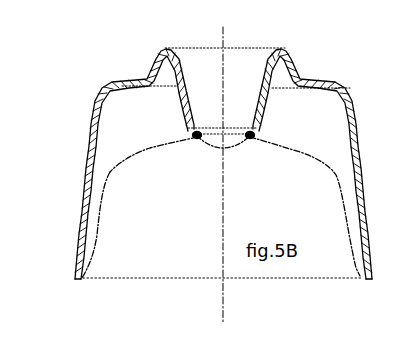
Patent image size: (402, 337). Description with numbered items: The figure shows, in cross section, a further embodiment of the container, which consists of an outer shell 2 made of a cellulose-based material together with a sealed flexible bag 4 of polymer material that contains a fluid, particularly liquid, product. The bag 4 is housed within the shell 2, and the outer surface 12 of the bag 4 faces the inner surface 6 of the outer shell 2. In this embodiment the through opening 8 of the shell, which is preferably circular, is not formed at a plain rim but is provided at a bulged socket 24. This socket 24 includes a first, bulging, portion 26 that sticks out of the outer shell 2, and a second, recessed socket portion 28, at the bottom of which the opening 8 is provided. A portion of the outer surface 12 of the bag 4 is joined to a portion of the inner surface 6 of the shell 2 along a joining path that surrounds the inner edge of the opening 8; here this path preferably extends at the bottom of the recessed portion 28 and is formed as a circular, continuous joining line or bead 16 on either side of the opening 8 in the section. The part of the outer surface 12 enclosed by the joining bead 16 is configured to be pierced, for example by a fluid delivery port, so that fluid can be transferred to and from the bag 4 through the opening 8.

The outer shell 2 is at (96, 92).
The sealed flexible bag 4 is at (104, 189).
The inner surface 6 is at (95, 160).
The through opening 8 is at (231, 128).
The outer surface 12 is at (127, 154).
The joining line or bead 16 is at (195, 140).
The bulged socket 24 is at (201, 85).
The bulging portion 26 is at (158, 72).
The recessed portion 28 is at (243, 97).